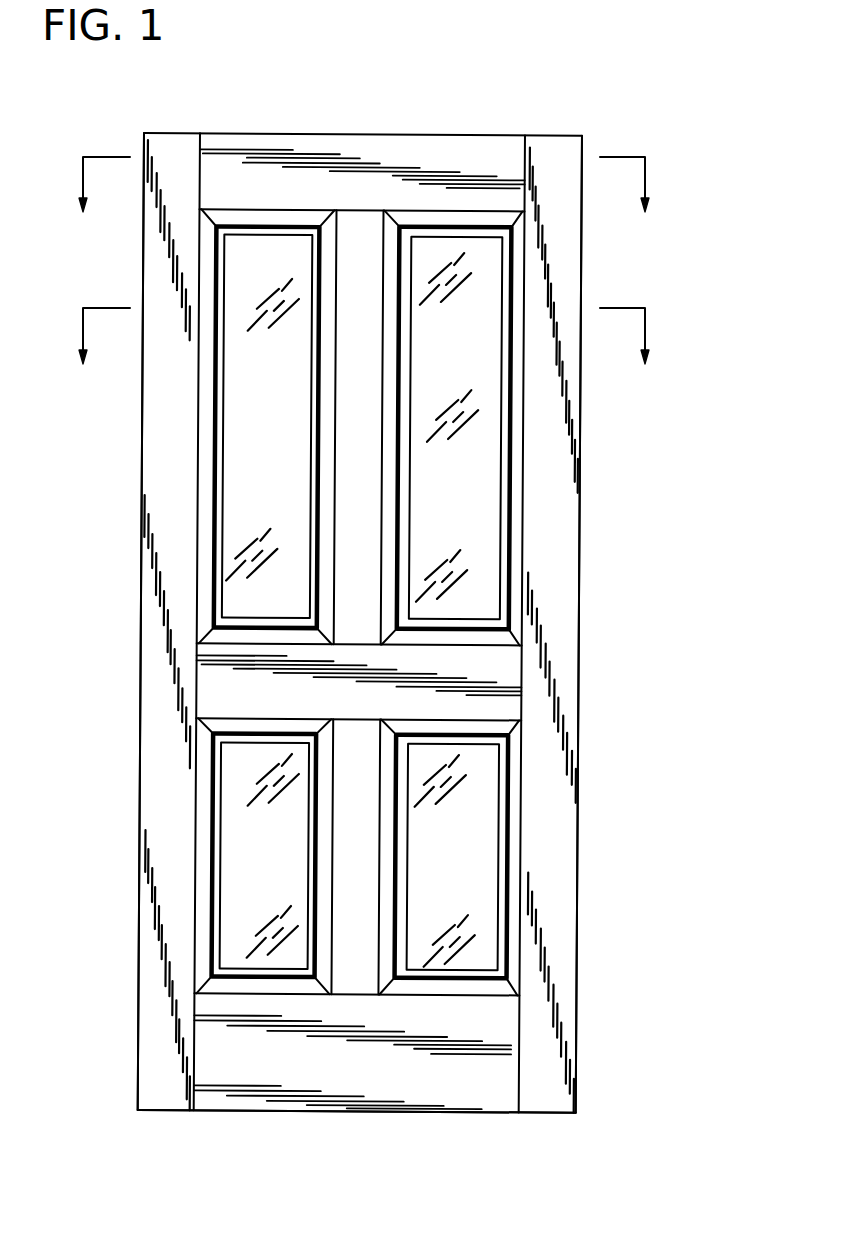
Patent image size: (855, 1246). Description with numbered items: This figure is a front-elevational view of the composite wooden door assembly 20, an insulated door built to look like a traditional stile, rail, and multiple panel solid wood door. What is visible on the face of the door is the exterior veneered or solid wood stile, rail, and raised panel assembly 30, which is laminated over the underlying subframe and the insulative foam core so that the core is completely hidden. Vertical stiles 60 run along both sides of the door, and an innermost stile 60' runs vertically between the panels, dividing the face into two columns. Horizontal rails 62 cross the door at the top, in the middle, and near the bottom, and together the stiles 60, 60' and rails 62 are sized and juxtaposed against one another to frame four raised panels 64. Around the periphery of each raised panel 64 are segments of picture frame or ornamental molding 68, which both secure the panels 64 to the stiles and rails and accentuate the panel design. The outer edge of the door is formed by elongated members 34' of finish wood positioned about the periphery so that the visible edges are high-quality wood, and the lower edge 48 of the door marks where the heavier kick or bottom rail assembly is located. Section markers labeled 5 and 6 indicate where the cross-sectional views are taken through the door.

The wooden door assembly 20 is at (409, 63).
The exterior veneered or solid wood stile, rail, and raised panel assembly 30 is at (545, 130).
The elongated members 34' is at (376, 619).
The lower edge 48 is at (445, 1112).
The stile 60 is at (358, 623).
The innermost stile 60' is at (405, 602).
The rail 62 is at (242, 140).
The raised panel 64 is at (235, 262).
The molding 68 is at (380, 232).
The section line of FIG. 5 is at (364, 201).
The section line of FIG. 6 is at (364, 354).